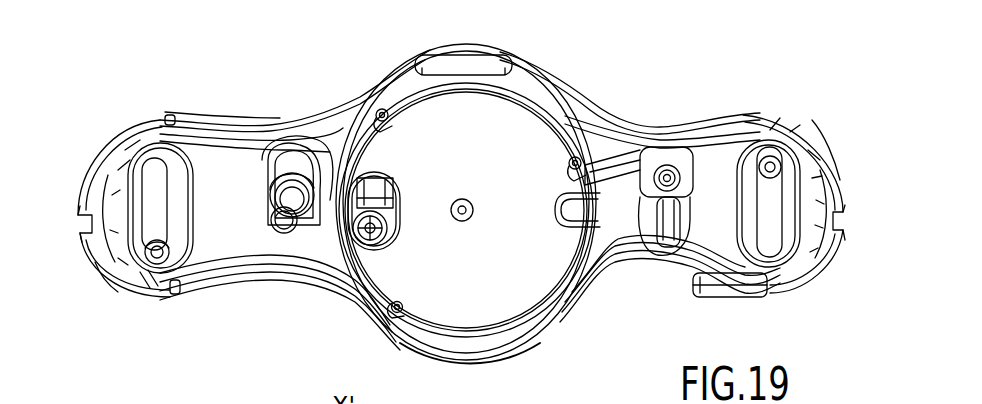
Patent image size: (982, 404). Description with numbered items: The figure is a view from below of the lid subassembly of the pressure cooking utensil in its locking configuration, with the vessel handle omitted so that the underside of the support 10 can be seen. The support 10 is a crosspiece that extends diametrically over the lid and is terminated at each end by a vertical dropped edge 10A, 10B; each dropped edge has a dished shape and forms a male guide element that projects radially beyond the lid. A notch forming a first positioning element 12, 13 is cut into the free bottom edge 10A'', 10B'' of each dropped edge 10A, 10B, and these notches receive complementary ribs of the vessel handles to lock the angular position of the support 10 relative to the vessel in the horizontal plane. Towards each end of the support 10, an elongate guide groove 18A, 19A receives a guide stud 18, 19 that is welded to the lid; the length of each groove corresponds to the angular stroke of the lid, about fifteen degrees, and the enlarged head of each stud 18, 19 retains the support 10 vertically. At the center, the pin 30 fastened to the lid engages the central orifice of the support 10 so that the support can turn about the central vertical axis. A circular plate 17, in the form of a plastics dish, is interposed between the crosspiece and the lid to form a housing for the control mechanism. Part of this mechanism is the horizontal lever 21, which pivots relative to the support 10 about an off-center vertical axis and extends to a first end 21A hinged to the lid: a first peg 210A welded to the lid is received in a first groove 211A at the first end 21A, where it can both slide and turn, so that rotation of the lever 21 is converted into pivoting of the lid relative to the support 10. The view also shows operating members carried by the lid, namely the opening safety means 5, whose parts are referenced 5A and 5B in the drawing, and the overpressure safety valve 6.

The opening safety means 5 is at (283, 193).
The latch knob 5A is at (286, 233).
The latch spring housing 5B is at (274, 167).
The overpressure safety valve 6 is at (358, 250).
The support 10 is at (626, 124).
The vertical dropped edge 10A is at (121, 237).
The free bottom edge 10A'' is at (79, 296).
The vertical dropped edge 10B is at (811, 219).
The free bottom edge 10B'' is at (846, 145).
The first positioning element 12 is at (840, 222).
The first positioning element 13 is at (86, 222).
The plate 17 is at (533, 253).
The guide stud 18 is at (776, 163).
The elongate guide groove 18A is at (771, 258).
The guide stud 19 is at (156, 262).
The elongate guide groove 19A is at (153, 176).
The horizontal lever 21 is at (667, 152).
The first end 21A is at (692, 190).
The pin 30 is at (470, 204).
The first peg 210A is at (687, 298).
The first groove 211A is at (668, 255).